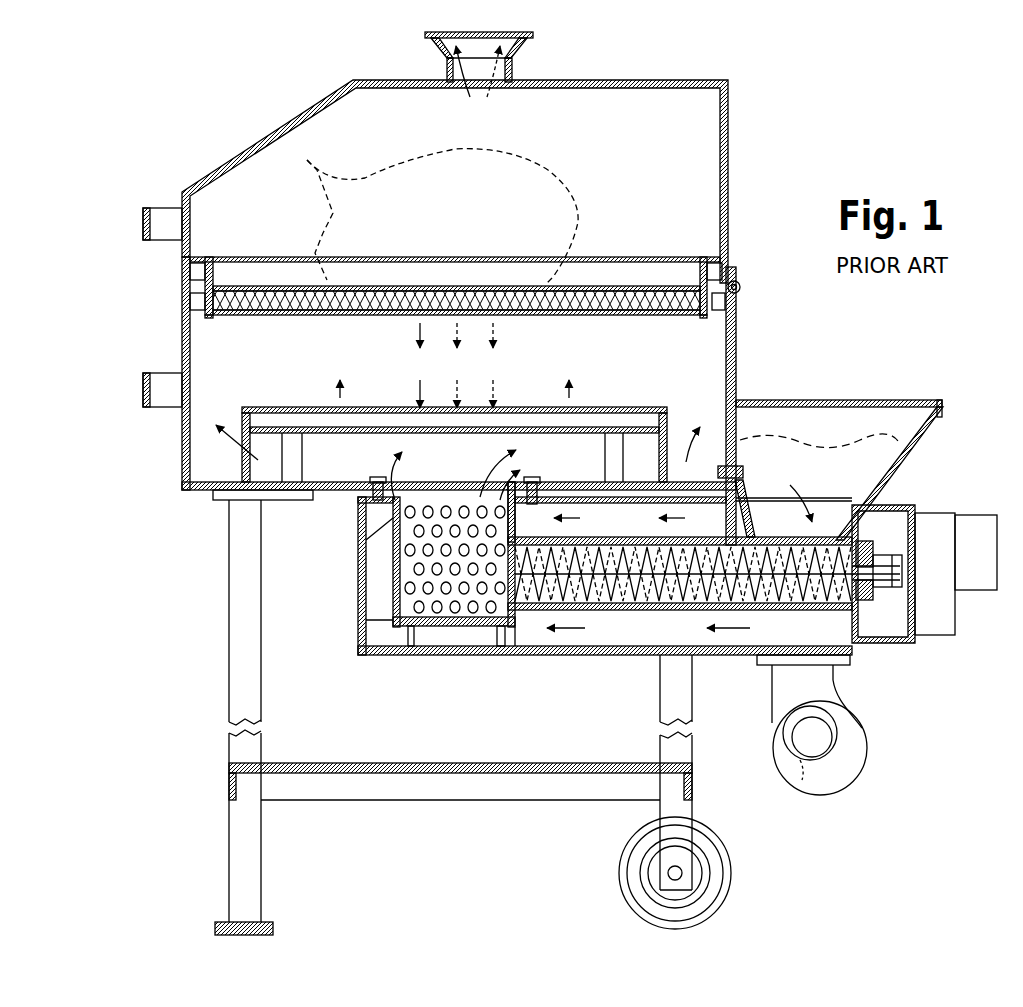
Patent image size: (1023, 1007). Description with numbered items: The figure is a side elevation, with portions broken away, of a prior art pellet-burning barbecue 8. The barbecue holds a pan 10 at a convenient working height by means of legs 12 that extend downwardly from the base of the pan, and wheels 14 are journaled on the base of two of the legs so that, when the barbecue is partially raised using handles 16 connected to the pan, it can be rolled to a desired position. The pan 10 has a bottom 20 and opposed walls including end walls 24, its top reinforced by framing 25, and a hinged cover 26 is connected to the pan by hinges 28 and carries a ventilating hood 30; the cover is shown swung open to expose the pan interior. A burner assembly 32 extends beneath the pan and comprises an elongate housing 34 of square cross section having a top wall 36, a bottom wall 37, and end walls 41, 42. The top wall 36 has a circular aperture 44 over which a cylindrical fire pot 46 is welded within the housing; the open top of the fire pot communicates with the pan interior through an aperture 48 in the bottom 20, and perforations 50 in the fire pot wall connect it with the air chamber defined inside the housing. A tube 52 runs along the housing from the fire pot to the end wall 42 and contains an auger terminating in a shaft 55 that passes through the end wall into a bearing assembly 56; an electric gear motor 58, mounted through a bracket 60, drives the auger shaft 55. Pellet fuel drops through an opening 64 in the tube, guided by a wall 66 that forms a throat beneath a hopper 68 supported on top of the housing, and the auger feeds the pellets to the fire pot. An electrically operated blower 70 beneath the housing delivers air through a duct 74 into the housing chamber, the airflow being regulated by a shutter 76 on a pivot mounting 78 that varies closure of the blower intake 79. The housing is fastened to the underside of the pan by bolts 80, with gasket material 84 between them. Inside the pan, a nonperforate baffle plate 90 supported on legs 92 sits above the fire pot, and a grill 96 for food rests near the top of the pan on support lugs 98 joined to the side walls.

The pellet-burning barbecue 8 is at (266, 90).
The pan 10 is at (170, 480).
The legs 12 is at (261, 860).
The wheels 14 is at (732, 873).
The handles 16 is at (165, 208).
The bottom 20 is at (195, 492).
The end walls 24 is at (182, 432).
The framing 25 is at (209, 318).
The hinged cover 26 is at (736, 120).
The hinges 28 is at (741, 287).
The ventilating hood 30 is at (440, 44).
The burner assembly 32 is at (352, 660).
The housing 34 is at (580, 655).
The top wall 36 is at (596, 520).
The bottom wall 37 is at (525, 655).
The end wall 41 is at (358, 575).
The end wall 42 is at (770, 628).
The circular aperture 44 is at (358, 545).
The fire pot 46 is at (375, 620).
The aperture 48 is at (400, 452).
The perforations 50 is at (470, 612).
The tube 52 is at (880, 548).
The shaft 55 is at (872, 600).
The bearing assembly 56 is at (880, 520).
The electric gear motor 58 is at (950, 607).
The bracket 60 is at (905, 643).
The opening 64 is at (798, 493).
The wall 66 is at (746, 505).
The hopper 68 is at (890, 440).
The blower 70 is at (860, 760).
The duct 74 is at (772, 685).
The shutter 76 is at (805, 775).
The pivot mounting 78 is at (784, 728).
The intake 79 is at (845, 722).
The bolts 80 is at (540, 480).
The gasket material 84 is at (360, 500).
The baffle plate 90 is at (540, 407).
The legs 92 is at (625, 427).
The grill 96 is at (635, 290).
The support lugs 98 is at (232, 318).